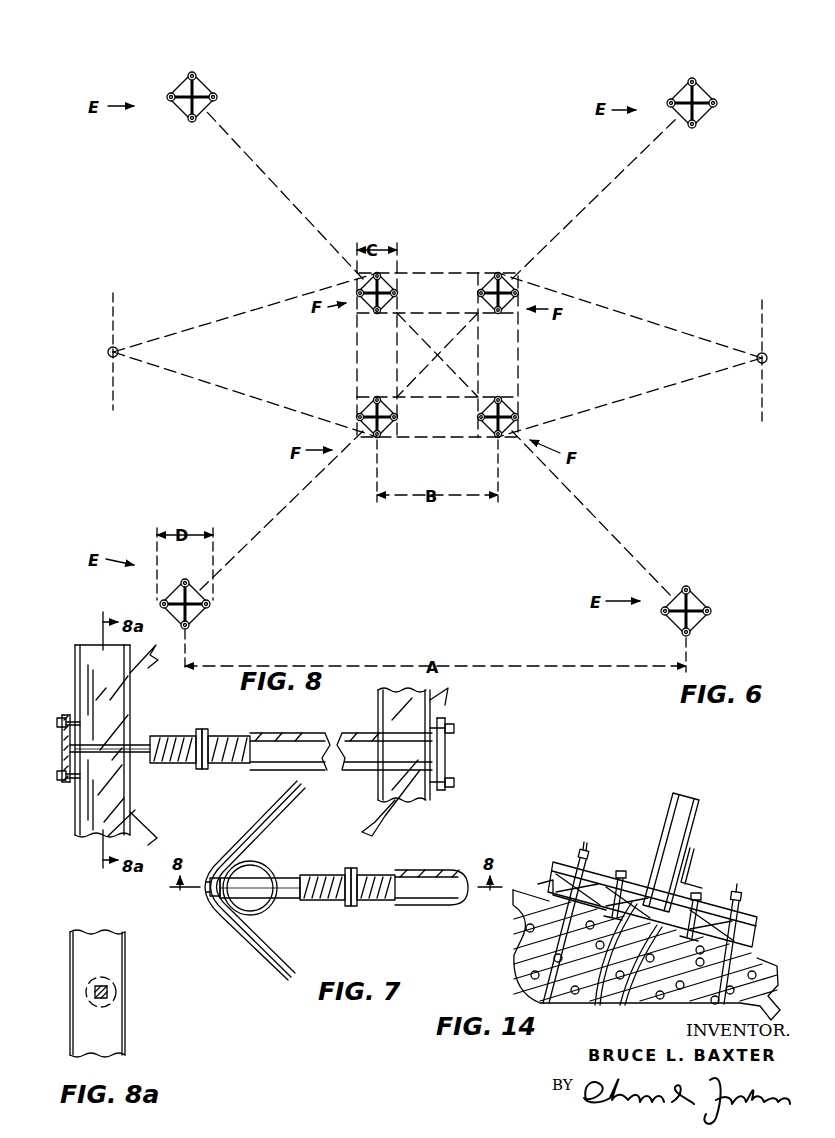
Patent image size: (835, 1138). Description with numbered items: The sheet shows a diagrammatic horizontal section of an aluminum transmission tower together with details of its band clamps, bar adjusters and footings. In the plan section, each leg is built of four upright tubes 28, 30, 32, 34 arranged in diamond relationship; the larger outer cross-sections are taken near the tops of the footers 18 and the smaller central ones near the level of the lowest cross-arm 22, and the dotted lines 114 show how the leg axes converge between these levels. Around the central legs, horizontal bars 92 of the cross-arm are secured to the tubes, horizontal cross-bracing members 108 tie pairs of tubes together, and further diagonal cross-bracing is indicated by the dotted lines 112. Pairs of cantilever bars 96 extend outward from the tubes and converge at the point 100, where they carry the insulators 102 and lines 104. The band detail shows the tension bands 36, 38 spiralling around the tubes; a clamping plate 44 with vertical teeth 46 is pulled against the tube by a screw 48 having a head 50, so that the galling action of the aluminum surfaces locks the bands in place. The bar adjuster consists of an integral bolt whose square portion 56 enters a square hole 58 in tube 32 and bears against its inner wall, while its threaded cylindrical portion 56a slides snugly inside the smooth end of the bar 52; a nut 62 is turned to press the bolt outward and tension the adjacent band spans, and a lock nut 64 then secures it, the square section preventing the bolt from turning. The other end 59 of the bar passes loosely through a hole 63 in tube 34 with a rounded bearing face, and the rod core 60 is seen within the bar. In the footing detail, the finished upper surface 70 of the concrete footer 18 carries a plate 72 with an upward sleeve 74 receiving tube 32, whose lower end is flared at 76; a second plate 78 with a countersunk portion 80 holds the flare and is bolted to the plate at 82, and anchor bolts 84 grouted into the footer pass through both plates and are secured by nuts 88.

In FIG. 14, the footer 18 is at (530, 978).
In FIG. 6, the lowest cross-arm 22 is at (640, 398).
In FIG. 6, the upright tube 28 is at (190, 123).
In FIG. 6, the upright tube 30 is at (196, 71).
In FIG. 6, the upright tube 32 is at (170, 94).
In FIG. 8, the upright tube 32 is at (118, 732).
In FIG. 7, the upright tube 32 is at (266, 908).
In FIG. 8A, the upright tube 32 is at (110, 948).
In FIG. 14, the upright tube 32 is at (674, 815).
In FIG. 6, the upright tube 34 is at (217, 97).
In FIG. 8, the upright tube 34 is at (442, 720).
In FIG. 7, the tension band 36 is at (284, 960).
In FIG. 7, the tension band 38 is at (288, 968).
In FIG. 8, the clamping plate 44 is at (62, 749).
In FIG. 8, the vertical teeth 46 is at (63, 716).
In FIG. 7, the screw 48 is at (240, 875).
In FIG. 8, the screw head 50 is at (62, 778).
In FIG. 7, the screw head 50 is at (212, 898).
In FIG. 8, the bar 52 is at (292, 732).
In FIG. 7, the bar 52 is at (430, 870).
In FIG. 8, the square cross-sectioned bolt portion 56 is at (148, 744).
In FIG. 7, the square cross-sectioned bolt portion 56 is at (292, 880).
In FIG. 8A, the square cross-sectioned bolt portion 56 is at (119, 970).
In FIG. 8, the threaded cylindrical bolt portion 56a is at (180, 736).
In FIG. 7, the square hole 58 is at (290, 878).
In FIG. 8A, the square hole 58 is at (108, 991).
In FIG. 8, the bar end 59 is at (428, 785).
In FIG. 8, the rod core 60 is at (80, 748).
In FIG. 8, the nut 62 is at (202, 770).
In FIG. 7, the nut 62 is at (356, 908).
In FIG. 8, the hole 63 is at (375, 772).
In FIG. 8, the lock nut 64 is at (199, 770).
In FIG. 7, the lock nut 64 is at (347, 908).
In FIG. 14, the upper surface of footer 70 is at (760, 966).
In FIG. 14, the plate 72 is at (603, 885).
In FIG. 14, the upward sleeve 74 is at (692, 860).
In FIG. 14, the flare 76 is at (580, 1003).
In FIG. 14, the second plate 78 is at (553, 897).
In FIG. 14, the countersunk portion 80 is at (617, 1007).
In FIG. 14, the bolt connection 82 is at (696, 897).
In FIG. 14, the anchor bolt 84 is at (560, 944).
In FIG. 14, the nut 88 is at (582, 850).
In FIG. 6, the horizontal bar 92 is at (455, 270).
In FIG. 6, the cantilever bar 96 is at (224, 318).
In FIG. 6, the support point 100 is at (117, 348).
In FIG. 6, the insulator 102 is at (108, 356).
In FIG. 6, the line 104 is at (115, 407).
In FIG. 6, the horizontal cross-bracing member 108 is at (535, 350).
In FIG. 6, the diagonal cross-bracing 112 is at (413, 310).
In FIG. 6, the leg centerline 114 is at (287, 192).